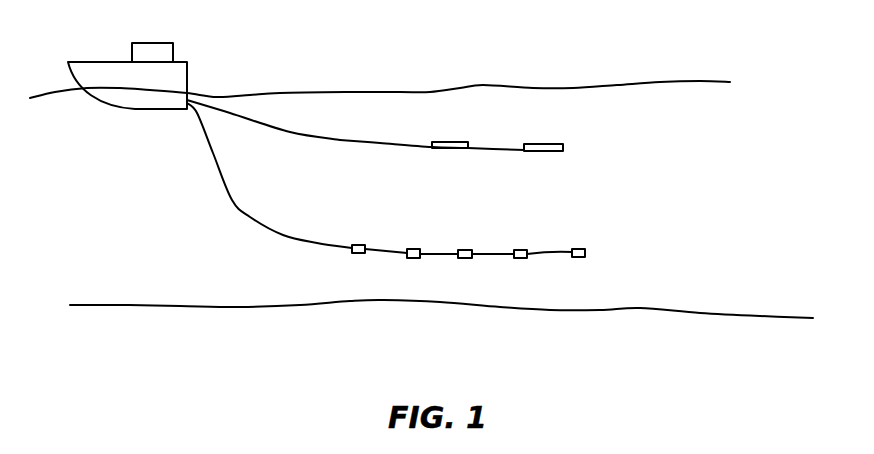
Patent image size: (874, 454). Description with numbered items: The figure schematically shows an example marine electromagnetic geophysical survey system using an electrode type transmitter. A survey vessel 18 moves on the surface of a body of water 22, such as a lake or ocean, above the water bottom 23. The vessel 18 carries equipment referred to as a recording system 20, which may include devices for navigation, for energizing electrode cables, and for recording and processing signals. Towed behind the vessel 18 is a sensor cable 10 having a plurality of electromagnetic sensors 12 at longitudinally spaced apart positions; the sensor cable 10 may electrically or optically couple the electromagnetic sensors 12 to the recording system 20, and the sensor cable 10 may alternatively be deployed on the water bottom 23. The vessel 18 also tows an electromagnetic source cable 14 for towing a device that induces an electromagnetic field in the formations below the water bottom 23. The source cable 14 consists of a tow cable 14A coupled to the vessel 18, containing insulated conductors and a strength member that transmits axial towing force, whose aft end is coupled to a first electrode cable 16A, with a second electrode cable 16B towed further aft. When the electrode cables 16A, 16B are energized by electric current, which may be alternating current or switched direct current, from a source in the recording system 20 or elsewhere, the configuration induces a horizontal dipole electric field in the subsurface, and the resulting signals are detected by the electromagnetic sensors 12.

The sensor cable 10 is at (272, 230).
The electromagnetic sensors 12 is at (357, 255).
The electromagnetic source cable 14 is at (375, 143).
The tow cable 14A is at (293, 133).
The first electrode cable 16A is at (448, 150).
The second electrode cable 16B is at (543, 152).
The survey vessel 18 is at (187, 82).
The recording system 20 is at (173, 55).
The body of water 22 is at (687, 130).
The water bottom 23 is at (129, 305).